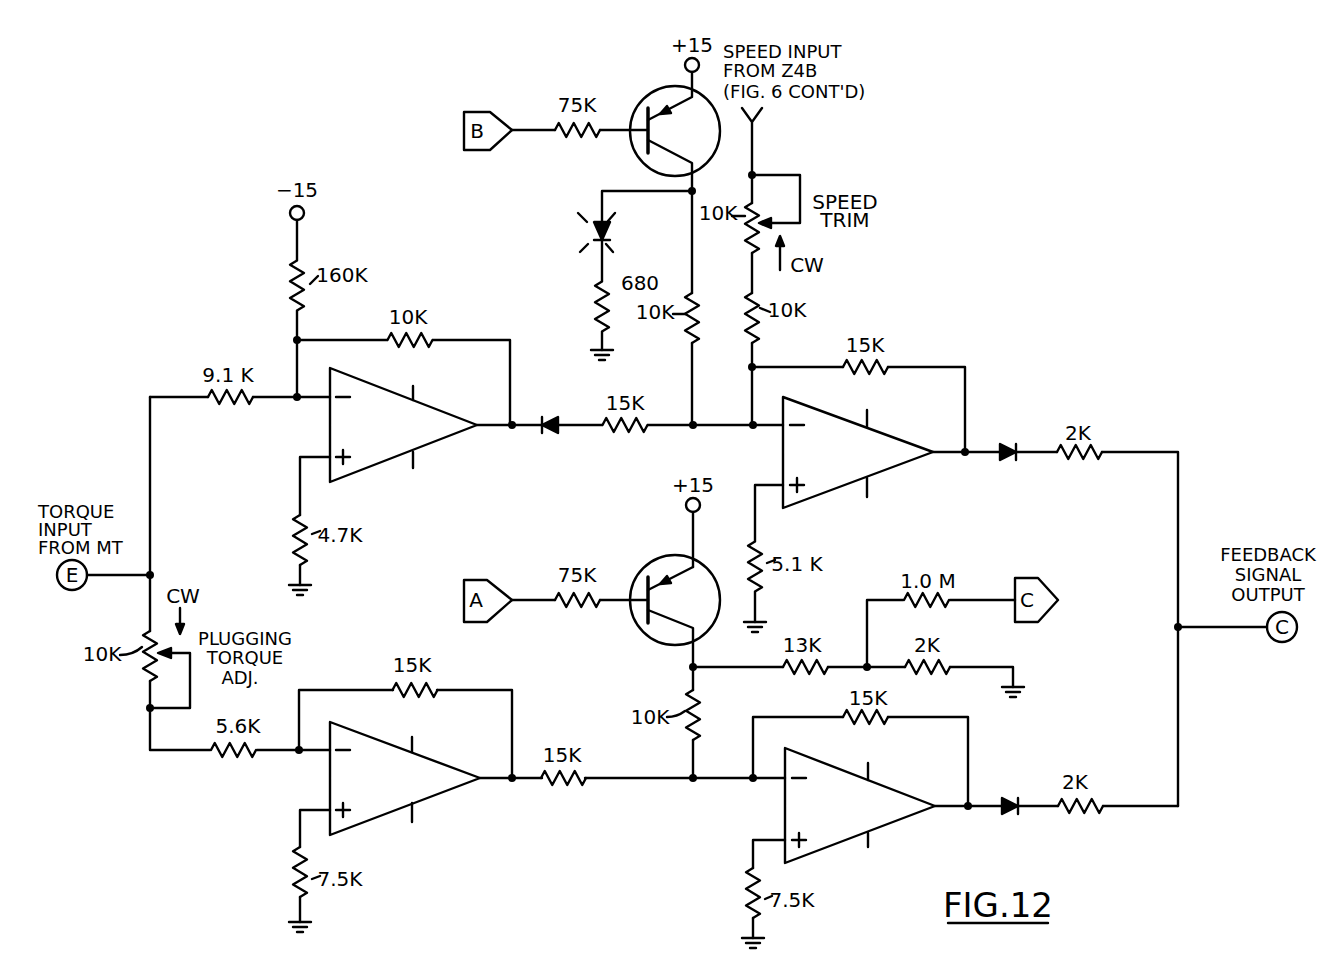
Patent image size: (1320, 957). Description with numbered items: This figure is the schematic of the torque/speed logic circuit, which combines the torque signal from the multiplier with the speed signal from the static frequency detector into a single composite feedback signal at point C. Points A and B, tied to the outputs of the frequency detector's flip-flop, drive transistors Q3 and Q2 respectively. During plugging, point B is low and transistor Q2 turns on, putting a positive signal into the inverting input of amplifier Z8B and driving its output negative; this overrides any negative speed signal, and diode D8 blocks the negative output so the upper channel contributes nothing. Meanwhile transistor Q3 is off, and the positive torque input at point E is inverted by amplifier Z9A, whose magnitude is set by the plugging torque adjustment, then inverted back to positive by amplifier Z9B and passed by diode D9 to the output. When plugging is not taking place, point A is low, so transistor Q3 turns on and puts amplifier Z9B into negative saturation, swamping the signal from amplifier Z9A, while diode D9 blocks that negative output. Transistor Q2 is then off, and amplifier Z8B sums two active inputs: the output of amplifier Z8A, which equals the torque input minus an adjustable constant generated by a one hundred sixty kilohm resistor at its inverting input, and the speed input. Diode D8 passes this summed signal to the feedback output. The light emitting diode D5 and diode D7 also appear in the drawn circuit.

The transistor Q2 is at (662, 88).
The transistor Q3 is at (668, 558).
The light emitting diode D5 is at (612, 232).
The diode D7 is at (548, 412).
The diode D8 is at (1008, 437).
The diode D9 is at (1010, 792).
The amplifier Z8A is at (403, 429).
The amplifier Z8B is at (858, 457).
The amplifier Z9A is at (405, 783).
The amplifier Z9B is at (860, 809).